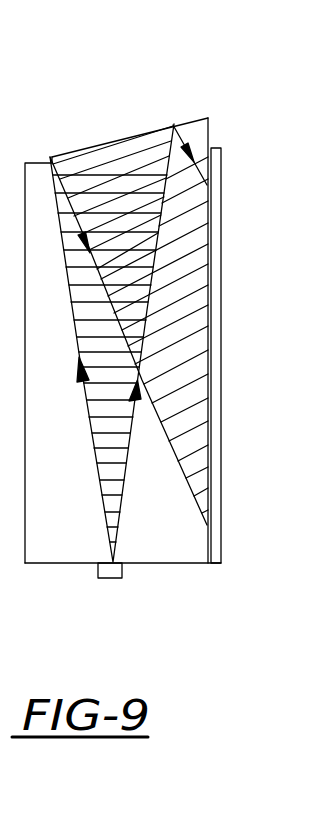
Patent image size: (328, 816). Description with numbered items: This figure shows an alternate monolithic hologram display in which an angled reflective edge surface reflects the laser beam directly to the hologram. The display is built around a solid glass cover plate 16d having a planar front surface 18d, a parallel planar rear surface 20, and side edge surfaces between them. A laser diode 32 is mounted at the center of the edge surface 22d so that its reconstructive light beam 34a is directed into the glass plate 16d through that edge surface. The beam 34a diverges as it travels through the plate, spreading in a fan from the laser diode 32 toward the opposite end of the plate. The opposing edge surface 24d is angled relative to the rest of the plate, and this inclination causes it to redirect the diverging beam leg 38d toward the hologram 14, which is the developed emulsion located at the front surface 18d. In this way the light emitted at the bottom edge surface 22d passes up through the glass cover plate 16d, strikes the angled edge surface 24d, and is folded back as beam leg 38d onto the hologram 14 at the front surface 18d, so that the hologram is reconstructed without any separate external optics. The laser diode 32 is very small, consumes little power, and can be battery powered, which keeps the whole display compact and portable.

The hologram 14 is at (211, 299).
The solid glass cover plate 16d is at (38, 163).
The front surface 18d is at (211, 207).
The rear surface 20 is at (318, 357).
The edge surface 22d is at (190, 564).
The angled edge surface 24d is at (189, 120).
The laser diode 32 is at (123, 570).
The reconstructive light beam 34a is at (122, 470).
The diverging beam leg 38d is at (206, 166).